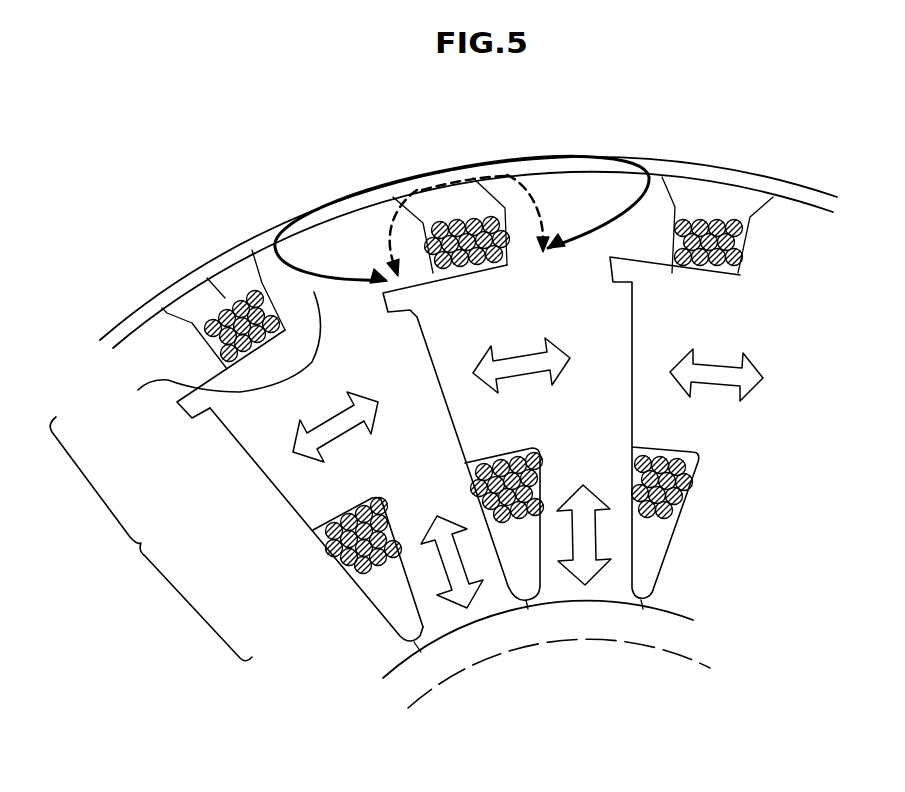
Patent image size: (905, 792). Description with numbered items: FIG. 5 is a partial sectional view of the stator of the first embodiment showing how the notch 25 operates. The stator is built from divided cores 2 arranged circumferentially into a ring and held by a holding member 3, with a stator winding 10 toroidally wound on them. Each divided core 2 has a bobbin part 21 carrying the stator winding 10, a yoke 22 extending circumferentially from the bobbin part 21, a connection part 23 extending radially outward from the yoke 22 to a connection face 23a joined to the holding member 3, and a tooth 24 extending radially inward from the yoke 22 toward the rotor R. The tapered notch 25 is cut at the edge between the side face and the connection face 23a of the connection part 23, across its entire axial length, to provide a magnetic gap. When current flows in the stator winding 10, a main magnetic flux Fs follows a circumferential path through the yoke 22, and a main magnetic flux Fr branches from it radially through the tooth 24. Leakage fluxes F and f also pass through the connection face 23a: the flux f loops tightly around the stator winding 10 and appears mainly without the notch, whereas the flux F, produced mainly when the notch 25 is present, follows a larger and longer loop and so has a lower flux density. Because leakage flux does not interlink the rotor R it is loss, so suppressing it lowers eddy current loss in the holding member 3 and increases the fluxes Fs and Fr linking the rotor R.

The divided core 2 is at (151, 539).
The holding member 3 is at (757, 178).
The stator winding 10 is at (220, 307).
The bobbin part 21 is at (313, 497).
The yoke 22 is at (293, 397).
The connection part 23 is at (200, 380).
The connection face 23a is at (367, 206).
The tooth 24 is at (420, 573).
The notch 25 is at (257, 265).
The leakage magnetic flux F is at (293, 222).
The leakage magnetic flux f is at (550, 178).
The main magnetic flux Fs is at (528, 465).
The main magnetic flux Fr is at (584, 519).
The rotor R is at (696, 664).